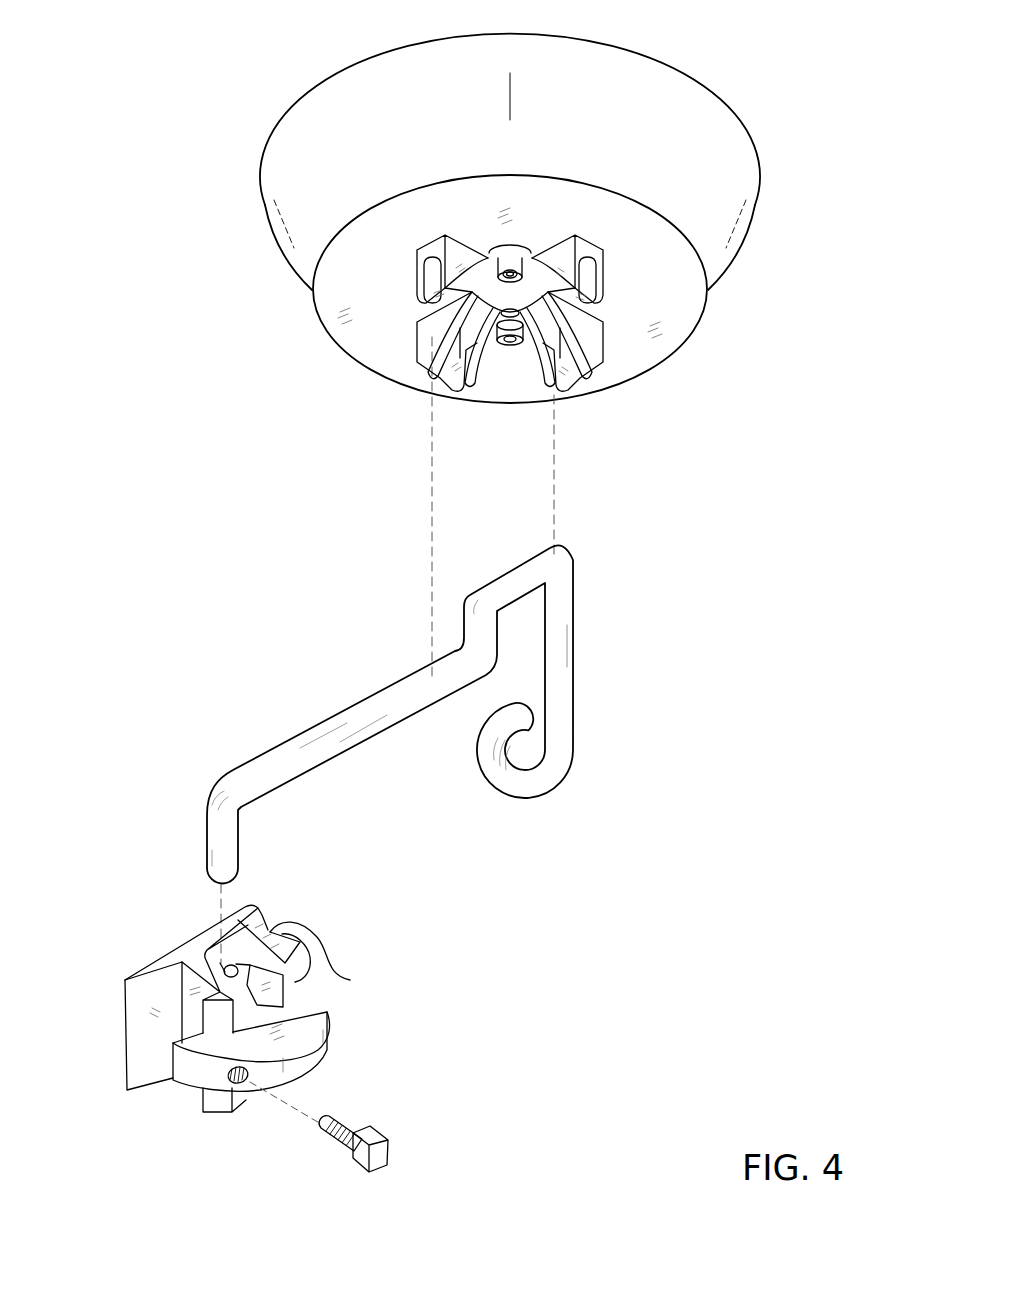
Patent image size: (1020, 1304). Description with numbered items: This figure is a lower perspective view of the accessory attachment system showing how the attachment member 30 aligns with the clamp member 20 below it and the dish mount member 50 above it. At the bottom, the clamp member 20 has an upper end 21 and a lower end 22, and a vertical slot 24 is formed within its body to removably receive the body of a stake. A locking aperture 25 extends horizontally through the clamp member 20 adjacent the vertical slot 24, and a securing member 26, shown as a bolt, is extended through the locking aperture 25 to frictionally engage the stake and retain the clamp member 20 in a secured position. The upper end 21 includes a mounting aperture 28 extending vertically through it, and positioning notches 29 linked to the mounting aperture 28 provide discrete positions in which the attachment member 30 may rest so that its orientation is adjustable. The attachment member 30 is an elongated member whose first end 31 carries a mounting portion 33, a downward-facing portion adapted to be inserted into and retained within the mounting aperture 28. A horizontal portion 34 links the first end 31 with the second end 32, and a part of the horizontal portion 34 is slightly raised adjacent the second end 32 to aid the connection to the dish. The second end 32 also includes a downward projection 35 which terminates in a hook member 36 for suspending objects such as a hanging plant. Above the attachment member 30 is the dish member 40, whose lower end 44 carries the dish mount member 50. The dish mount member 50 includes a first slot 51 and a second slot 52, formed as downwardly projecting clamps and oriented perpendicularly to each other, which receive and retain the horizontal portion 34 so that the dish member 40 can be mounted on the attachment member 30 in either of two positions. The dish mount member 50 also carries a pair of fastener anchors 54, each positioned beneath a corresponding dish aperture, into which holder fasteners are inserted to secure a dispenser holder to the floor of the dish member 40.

The clamp member 20 is at (255, 1087).
The upper end 21 is at (164, 997).
The lower end 22 is at (243, 1112).
The vertical slot 24 is at (192, 1022).
The locking aperture 25 is at (226, 1077).
The securing member 26 is at (378, 1152).
The mounting aperture 28 is at (321, 937).
The positioning notches 29 is at (292, 962).
The attachment member 30 is at (417, 714).
The first end 31 is at (243, 790).
The second end 32 is at (567, 558).
The mounting portion 33 is at (220, 862).
The horizontal portion 34 is at (370, 738).
The downward projection 35 is at (575, 665).
The hook member 36 is at (540, 778).
The dish member 40 is at (280, 120).
The lower end 44 is at (687, 293).
The dish mount member 50 is at (520, 291).
The first slot 51 is at (433, 268).
The second slot 52 is at (590, 268).
The fastener anchors 54 is at (532, 263).